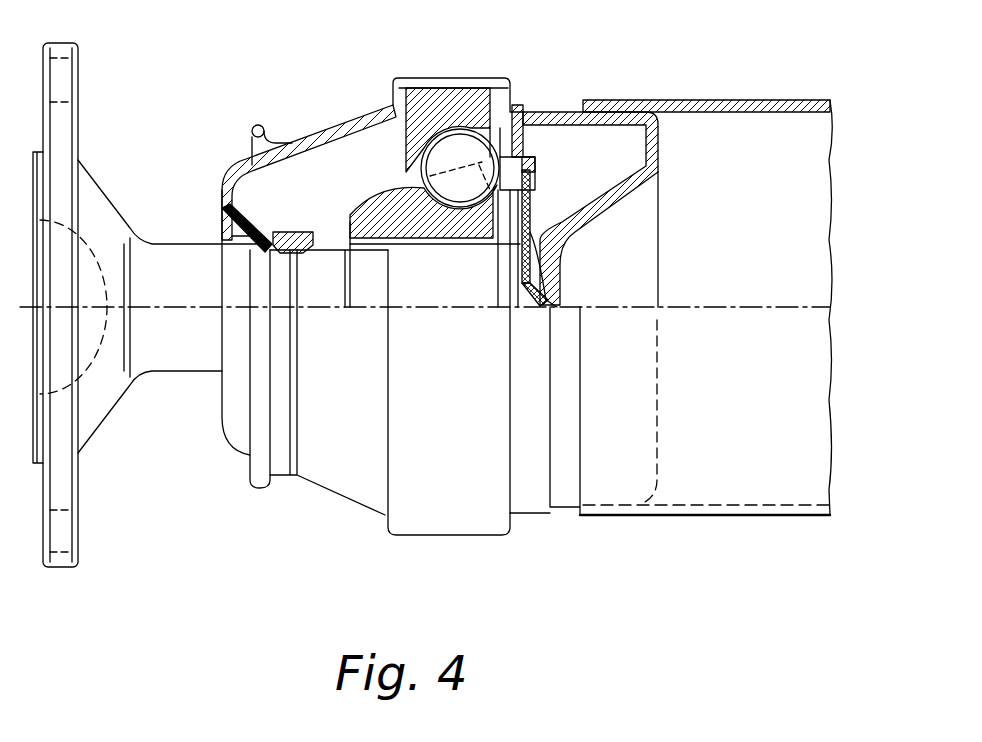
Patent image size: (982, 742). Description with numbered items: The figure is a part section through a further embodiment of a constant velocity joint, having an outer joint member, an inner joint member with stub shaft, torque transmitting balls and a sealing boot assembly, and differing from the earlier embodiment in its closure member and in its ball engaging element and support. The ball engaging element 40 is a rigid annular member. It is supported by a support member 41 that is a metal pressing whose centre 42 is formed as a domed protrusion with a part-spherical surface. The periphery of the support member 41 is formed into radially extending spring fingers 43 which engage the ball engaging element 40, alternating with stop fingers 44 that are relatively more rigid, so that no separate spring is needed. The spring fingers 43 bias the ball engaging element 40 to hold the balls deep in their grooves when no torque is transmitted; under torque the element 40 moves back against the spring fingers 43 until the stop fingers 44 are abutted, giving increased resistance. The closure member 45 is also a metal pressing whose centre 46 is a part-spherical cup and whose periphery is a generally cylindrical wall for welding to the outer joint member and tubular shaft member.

The ball engaging element 40 is at (515, 115).
The support member 41 is at (530, 232).
The centre of support member 42 is at (533, 293).
The spring fingers 43 is at (537, 177).
The stop fingers 44 is at (538, 168).
The closure member 45 is at (655, 148).
The centre of closure member 46 is at (560, 277).